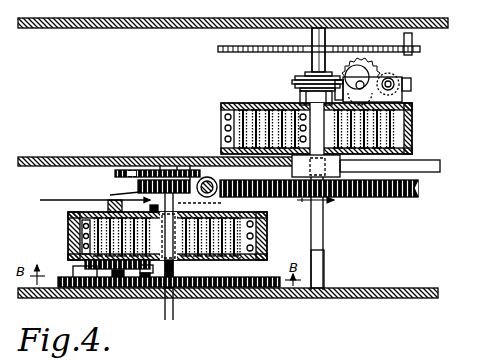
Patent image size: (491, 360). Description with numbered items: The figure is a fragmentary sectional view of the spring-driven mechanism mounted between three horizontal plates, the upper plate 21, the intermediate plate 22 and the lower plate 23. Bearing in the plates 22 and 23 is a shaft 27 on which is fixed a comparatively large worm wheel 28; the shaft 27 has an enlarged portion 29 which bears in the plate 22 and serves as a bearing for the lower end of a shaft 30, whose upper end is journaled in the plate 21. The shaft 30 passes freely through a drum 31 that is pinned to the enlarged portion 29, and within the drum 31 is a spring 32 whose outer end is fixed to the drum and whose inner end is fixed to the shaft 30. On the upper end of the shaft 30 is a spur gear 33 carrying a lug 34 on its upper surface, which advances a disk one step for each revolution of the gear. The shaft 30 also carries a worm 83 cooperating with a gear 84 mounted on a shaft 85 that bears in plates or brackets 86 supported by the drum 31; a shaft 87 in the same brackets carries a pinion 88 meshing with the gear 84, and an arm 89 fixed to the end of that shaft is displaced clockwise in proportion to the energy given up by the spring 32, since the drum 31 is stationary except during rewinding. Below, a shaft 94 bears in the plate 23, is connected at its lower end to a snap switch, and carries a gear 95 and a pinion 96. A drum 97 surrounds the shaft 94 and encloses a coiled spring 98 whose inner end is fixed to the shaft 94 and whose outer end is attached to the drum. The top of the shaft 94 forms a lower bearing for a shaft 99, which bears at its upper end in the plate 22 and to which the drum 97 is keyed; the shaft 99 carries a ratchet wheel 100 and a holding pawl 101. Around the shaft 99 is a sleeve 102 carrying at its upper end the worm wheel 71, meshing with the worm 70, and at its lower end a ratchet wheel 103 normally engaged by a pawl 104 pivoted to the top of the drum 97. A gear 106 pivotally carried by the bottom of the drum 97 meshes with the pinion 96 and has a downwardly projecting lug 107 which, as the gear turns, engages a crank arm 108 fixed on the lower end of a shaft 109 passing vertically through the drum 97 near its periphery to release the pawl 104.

The plate 21 is at (213, 14).
The plate 22 is at (79, 158).
The plate 23 is at (425, 292).
The shaft 27 is at (323, 241).
The worm wheel 28 is at (394, 198).
The enlarged portion 29 is at (377, 172).
The shaft 30 is at (310, 63).
The drum 31 is at (414, 132).
The spring 32 is at (232, 128).
The spur gear 33 is at (237, 52).
The lug 34 is at (412, 46).
The worm 70 is at (218, 185).
The worm wheel 71 is at (140, 181).
The worm 83 is at (296, 88).
The gear 84 is at (368, 76).
The shaft 85 is at (360, 93).
The plates or brackets 86 is at (396, 101).
The shaft 87 is at (396, 79).
The pinion 88 is at (397, 76).
The arm 89 is at (411, 86).
The shaft 94 is at (176, 315).
The gear 95 is at (261, 289).
The pinion 96 is at (176, 270).
The drum 97 is at (268, 246).
The coiled spring 98 is at (265, 221).
The shaft 99 is at (167, 170).
The ratchet wheel 100 is at (190, 168).
The holding pawl 101 is at (132, 168).
The sleeve 102 is at (110, 196).
The ratchet wheel 103 is at (107, 203).
The pawl 104 is at (100, 226).
The gear 106 is at (118, 277).
The lug 107 is at (144, 279).
The crank arm 108 is at (86, 278).
The shaft 109 is at (86, 258).